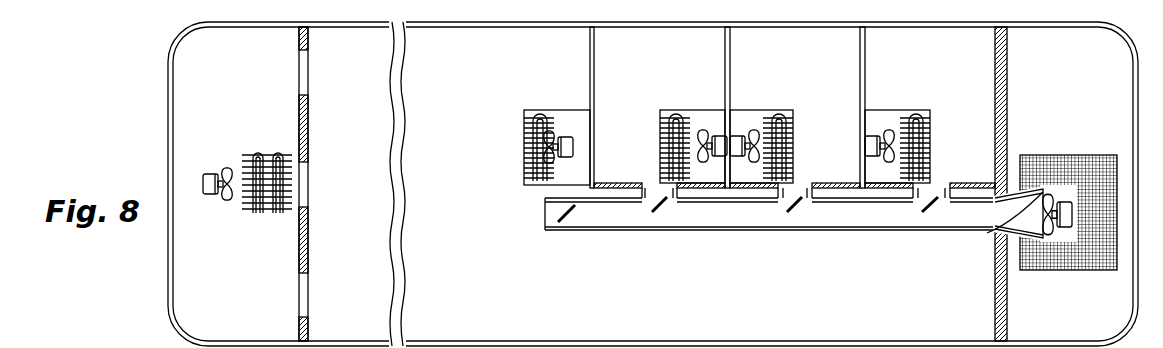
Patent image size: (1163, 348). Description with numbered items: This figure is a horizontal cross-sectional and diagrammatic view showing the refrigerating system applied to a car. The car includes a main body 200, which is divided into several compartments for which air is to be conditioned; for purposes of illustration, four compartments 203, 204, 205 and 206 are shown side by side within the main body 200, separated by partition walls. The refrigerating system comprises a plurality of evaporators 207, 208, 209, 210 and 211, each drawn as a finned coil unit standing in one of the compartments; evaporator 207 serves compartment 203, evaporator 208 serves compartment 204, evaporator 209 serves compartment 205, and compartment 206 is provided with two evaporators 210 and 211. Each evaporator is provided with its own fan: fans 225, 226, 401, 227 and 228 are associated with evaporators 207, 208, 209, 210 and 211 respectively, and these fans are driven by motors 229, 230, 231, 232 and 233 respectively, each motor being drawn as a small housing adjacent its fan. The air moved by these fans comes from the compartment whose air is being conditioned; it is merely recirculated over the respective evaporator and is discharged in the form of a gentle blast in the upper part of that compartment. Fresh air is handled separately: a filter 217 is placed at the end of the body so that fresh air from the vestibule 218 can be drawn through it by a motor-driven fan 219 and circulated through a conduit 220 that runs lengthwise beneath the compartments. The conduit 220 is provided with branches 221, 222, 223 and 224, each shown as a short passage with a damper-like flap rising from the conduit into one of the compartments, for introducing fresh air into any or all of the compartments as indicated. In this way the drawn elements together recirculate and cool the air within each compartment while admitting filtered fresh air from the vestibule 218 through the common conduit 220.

The main body 200 is at (625, 23).
The compartment 203 is at (949, 68).
The compartment 204 is at (809, 68).
The compartment 205 is at (668, 68).
The compartment 206 is at (474, 80).
The evaporator 207 is at (930, 126).
The evaporator 208 is at (793, 130).
The evaporator 209 is at (660, 132).
The evaporator 210 is at (530, 145).
The evaporator 211 is at (270, 213).
The filter 217 is at (1074, 165).
The vestibule 218 is at (1093, 111).
The motor-driven fan 219 is at (990, 232).
The conduit 220 is at (912, 231).
The branch 221 is at (945, 186).
The branch 222 is at (809, 186).
The branch 223 is at (645, 186).
The branch 224 is at (545, 216).
The fan 225 is at (892, 135).
The fan 226 is at (758, 138).
The fan 227 is at (565, 128).
The fan 228 is at (230, 168).
The motor 229 is at (872, 135).
The motor 230 is at (740, 135).
The motor 231 is at (718, 135).
The motor 232 is at (580, 137).
The motor 233 is at (210, 173).
The fan 401 is at (702, 137).